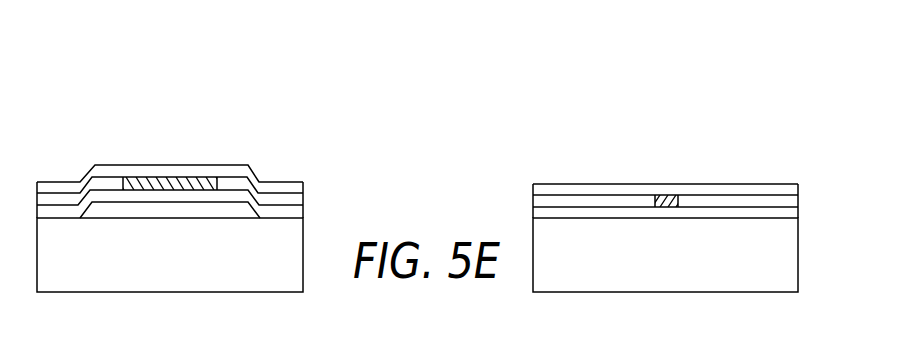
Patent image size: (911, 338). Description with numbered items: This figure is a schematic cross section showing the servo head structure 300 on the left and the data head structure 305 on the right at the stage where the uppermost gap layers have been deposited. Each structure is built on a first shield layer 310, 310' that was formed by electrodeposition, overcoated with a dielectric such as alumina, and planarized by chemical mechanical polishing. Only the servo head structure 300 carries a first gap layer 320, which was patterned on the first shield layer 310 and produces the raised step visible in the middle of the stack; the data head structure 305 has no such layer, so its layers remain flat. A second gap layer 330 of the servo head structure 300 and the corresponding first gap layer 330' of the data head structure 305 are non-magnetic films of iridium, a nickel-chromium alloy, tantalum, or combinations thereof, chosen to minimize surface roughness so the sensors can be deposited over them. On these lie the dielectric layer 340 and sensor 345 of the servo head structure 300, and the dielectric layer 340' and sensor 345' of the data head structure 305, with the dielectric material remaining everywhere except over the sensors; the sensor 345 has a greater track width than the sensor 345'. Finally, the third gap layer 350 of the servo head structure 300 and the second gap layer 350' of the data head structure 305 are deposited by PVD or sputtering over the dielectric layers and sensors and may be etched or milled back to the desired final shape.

The servo head structure 300 is at (145, 93).
The data head structure 305 is at (640, 91).
The first shield layer 310 is at (170, 255).
The first shield layer 310' is at (665, 255).
The first gap layer 320 is at (102, 208).
The second gap layer 330 is at (202, 190).
The first gap layer 330' is at (700, 190).
The dielectric layer 340 is at (170, 161).
The dielectric layer 340' is at (665, 171).
The sensor 345 is at (158, 156).
The sensor 345' is at (635, 174).
The third gap layer 350 is at (170, 148).
The second gap layer 350' is at (660, 154).